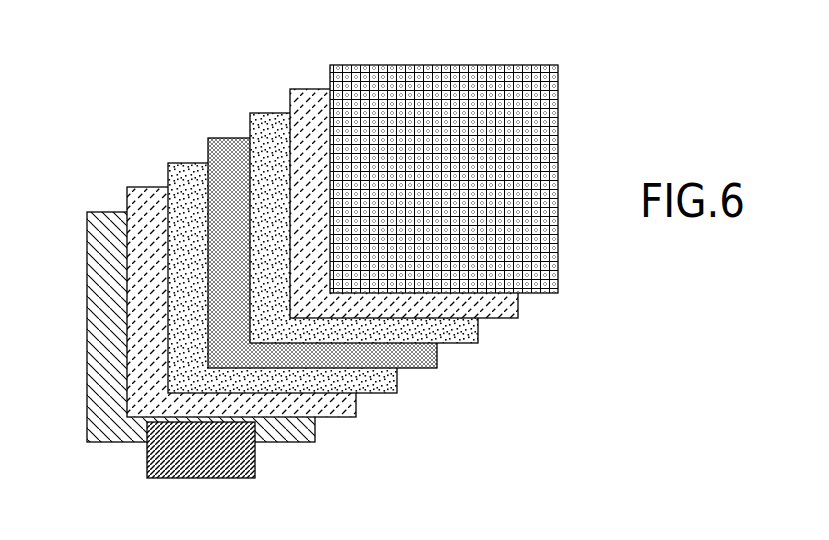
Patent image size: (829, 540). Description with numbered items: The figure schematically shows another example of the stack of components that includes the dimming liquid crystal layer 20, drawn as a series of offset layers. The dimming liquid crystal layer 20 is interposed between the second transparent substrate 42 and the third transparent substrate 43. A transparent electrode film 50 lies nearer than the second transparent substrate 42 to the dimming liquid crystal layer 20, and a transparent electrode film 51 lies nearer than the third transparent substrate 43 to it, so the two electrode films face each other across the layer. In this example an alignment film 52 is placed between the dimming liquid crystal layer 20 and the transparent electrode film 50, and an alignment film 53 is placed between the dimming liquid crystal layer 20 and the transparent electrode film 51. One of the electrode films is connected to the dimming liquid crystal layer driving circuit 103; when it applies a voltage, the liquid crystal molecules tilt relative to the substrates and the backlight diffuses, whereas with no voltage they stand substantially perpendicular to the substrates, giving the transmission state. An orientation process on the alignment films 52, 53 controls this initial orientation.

The third transparent substrate 43 is at (97, 214).
The transparent electrode film 51 is at (140, 202).
The alignment film 53 is at (180, 168).
The dimming liquid crystal layer 20 is at (221, 142).
The alignment film 52 is at (261, 117).
The transparent electrode film 50 is at (303, 96).
The second transparent substrate 42 is at (345, 73).
The dimming liquid crystal layer driving circuit 103 is at (183, 480).